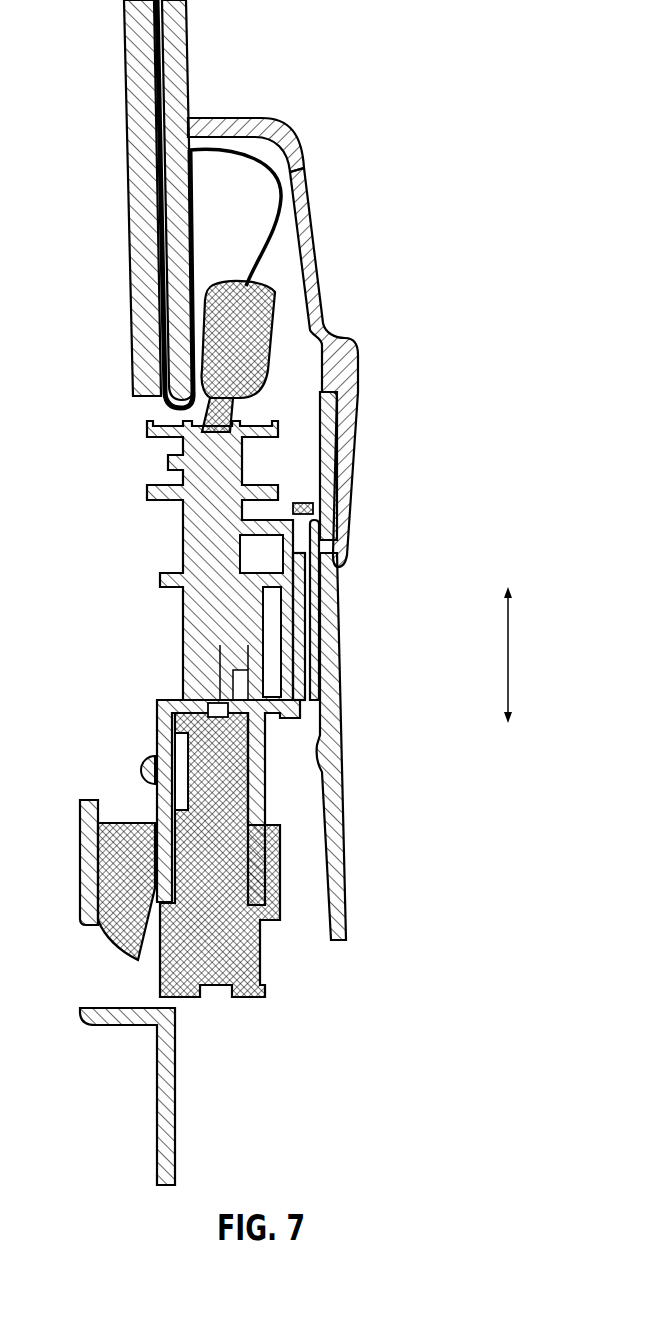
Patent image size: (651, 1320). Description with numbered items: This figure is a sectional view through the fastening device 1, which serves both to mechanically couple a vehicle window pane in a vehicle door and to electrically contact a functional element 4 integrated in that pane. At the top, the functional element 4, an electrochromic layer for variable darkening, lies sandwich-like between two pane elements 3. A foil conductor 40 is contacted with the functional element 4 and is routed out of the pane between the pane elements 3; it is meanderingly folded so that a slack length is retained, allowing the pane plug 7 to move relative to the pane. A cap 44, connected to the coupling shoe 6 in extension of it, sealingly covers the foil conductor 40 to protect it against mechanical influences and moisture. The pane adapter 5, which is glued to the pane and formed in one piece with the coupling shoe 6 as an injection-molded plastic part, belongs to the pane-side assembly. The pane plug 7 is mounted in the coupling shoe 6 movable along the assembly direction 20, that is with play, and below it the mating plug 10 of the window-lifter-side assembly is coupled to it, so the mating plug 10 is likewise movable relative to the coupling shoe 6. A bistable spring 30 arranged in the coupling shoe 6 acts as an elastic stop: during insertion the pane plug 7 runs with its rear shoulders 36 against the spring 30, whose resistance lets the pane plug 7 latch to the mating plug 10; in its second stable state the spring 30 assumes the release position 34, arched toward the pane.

The fastening device 1 is at (433, 573).
The pane elements 3 is at (130, 100).
The functional element 4 is at (160, 333).
The foil conductor 40 is at (258, 157).
The cap 44 is at (310, 227).
The pane adapter 5 is at (430, 417).
The release position 34 is at (302, 490).
The bistable spring 30 is at (305, 503).
The pane plug 7 is at (187, 533).
The shoulders 36 is at (283, 539).
The coupling shoe 6 is at (335, 663).
The assembly direction 20 is at (509, 653).
The mating plug 10 is at (156, 973).